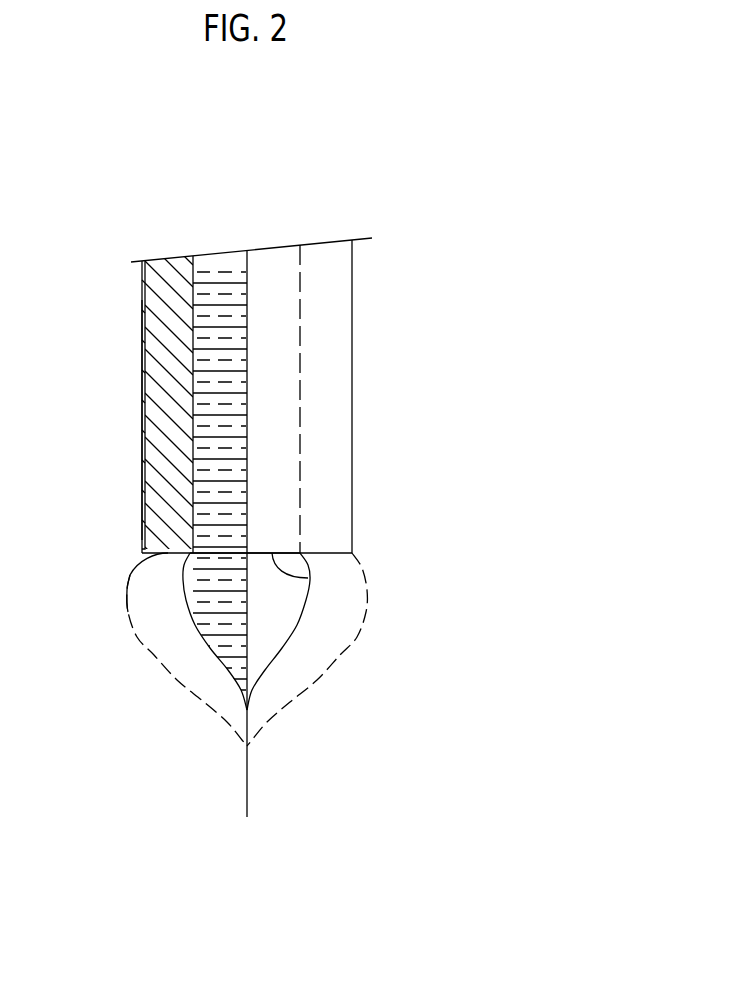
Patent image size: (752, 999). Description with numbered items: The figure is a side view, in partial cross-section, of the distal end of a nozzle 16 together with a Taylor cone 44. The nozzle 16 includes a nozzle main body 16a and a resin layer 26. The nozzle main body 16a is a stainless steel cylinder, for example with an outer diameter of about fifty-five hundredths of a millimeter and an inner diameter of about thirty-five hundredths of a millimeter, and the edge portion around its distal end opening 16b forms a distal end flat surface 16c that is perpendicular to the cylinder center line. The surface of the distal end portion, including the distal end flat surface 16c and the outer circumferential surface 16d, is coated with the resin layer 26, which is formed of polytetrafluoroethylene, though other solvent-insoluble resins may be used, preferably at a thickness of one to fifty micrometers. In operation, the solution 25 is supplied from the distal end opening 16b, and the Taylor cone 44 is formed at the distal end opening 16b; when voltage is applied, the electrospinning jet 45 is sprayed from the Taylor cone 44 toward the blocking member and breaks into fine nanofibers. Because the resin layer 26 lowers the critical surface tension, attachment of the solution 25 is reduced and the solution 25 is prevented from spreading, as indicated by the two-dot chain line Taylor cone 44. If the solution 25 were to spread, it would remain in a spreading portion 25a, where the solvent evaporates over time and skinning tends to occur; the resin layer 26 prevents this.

The nozzle 16 is at (353, 422).
The nozzle main body 16a is at (167, 265).
The distal end opening 16b is at (227, 553).
The distal end flat surface 16c is at (140, 563).
The outer circumferential surface 16d is at (140, 302).
The solution 25 is at (207, 270).
The spreading portion 25a is at (153, 573).
The resin layer 26 is at (142, 425).
The Taylor cone 44 is at (307, 617).
The electrospinning jet 45 is at (247, 788).